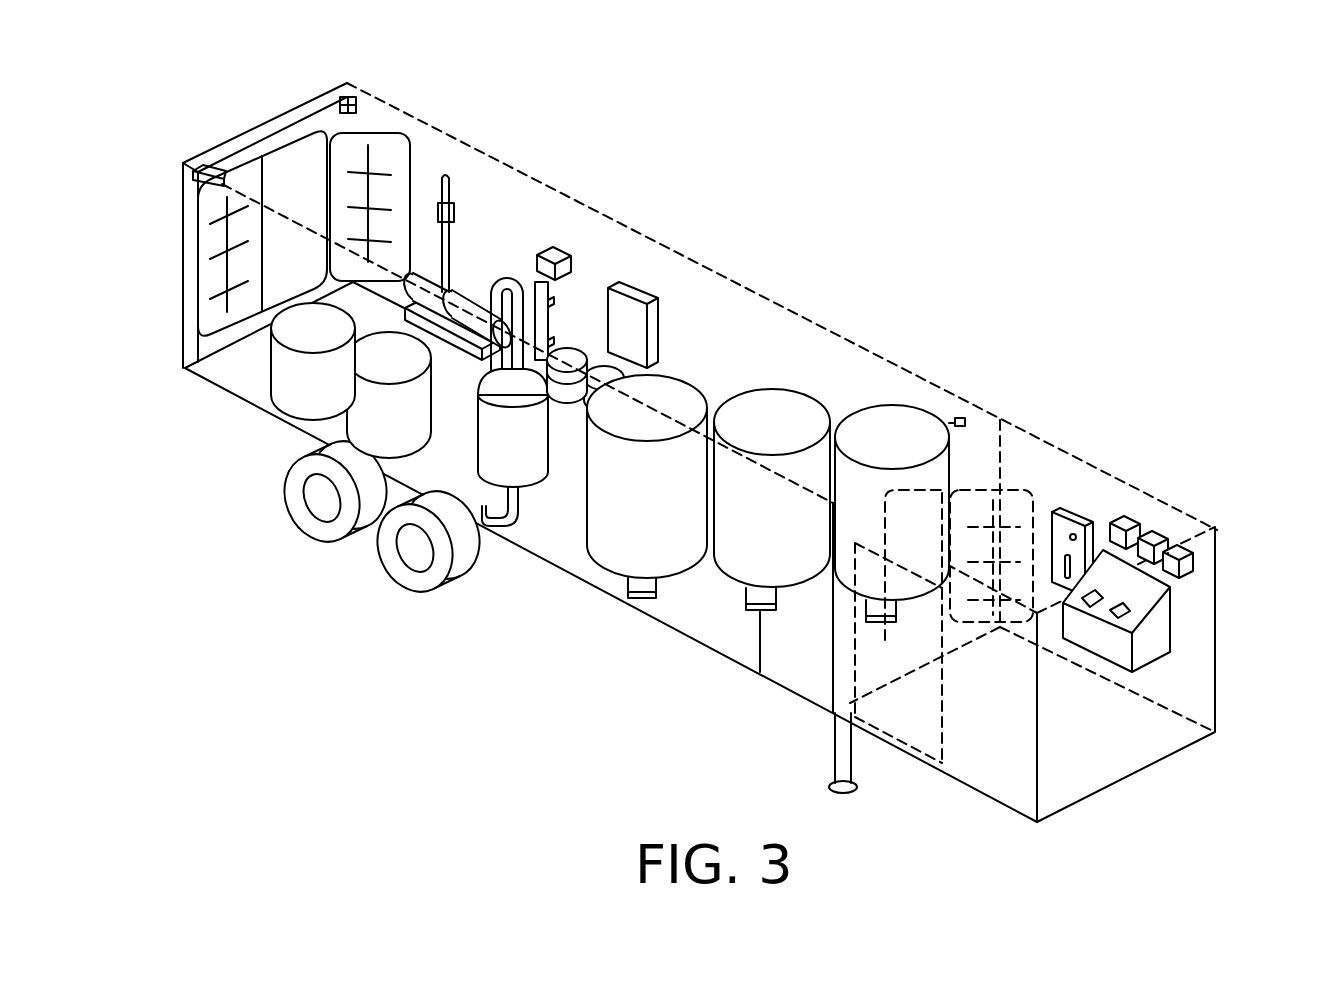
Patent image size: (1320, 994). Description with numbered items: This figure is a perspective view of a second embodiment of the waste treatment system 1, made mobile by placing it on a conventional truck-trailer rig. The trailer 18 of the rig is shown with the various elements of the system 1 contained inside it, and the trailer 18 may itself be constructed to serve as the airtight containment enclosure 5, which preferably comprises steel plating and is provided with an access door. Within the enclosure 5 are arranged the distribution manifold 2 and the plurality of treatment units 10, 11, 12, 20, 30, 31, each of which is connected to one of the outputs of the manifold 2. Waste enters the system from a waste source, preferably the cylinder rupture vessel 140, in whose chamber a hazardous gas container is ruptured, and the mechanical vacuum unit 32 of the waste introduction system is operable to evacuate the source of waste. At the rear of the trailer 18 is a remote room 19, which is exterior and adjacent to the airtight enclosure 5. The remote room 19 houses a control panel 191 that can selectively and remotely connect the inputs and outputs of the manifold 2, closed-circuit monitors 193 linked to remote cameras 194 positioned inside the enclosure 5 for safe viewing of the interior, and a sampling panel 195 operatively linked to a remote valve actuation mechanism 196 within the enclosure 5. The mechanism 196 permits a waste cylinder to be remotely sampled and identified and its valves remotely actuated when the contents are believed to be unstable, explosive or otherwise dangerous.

The waste treatment system 1 is at (718, 143).
The distribution manifold 2 is at (624, 305).
The containment enclosure 5 is at (182, 305).
The treatment unit 10 is at (665, 390).
The treatment unit 11 is at (780, 398).
The treatment unit 12 is at (900, 420).
The trailer 18 is at (212, 388).
The remote room 19 is at (1122, 782).
The treatment unit 20 is at (533, 470).
The treatment unit 30 is at (288, 405).
The treatment unit 31 is at (385, 433).
The mechanical vacuum unit 32 is at (567, 358).
The cylinder rupture vessel 140 is at (470, 307).
The control panel 191 is at (1157, 642).
The closed-circuit monitors 193 is at (1186, 540).
The remote cameras 194 is at (348, 95).
The sampling panel 195 is at (1072, 512).
The remote valve actuation mechanism 196 is at (539, 262).